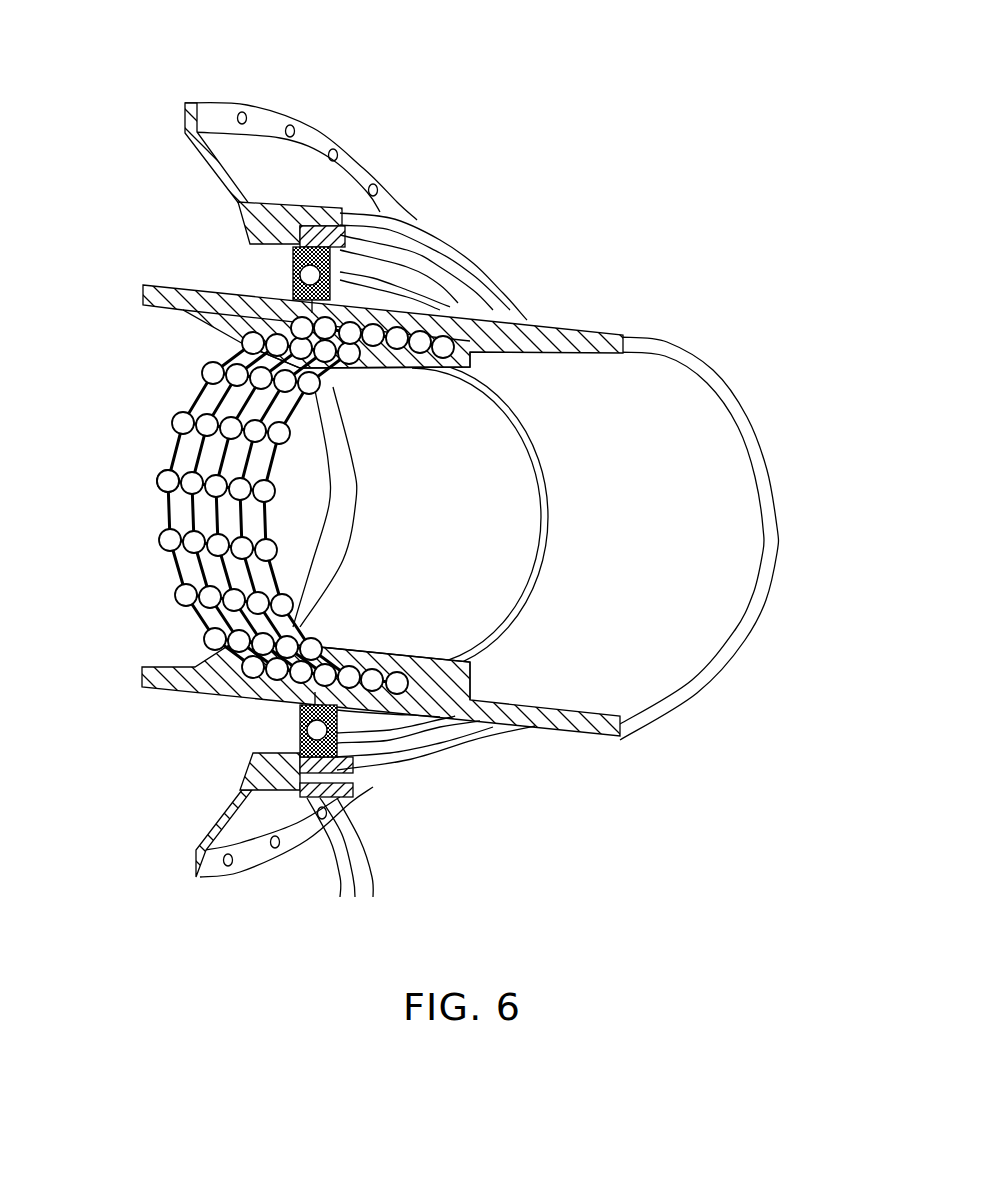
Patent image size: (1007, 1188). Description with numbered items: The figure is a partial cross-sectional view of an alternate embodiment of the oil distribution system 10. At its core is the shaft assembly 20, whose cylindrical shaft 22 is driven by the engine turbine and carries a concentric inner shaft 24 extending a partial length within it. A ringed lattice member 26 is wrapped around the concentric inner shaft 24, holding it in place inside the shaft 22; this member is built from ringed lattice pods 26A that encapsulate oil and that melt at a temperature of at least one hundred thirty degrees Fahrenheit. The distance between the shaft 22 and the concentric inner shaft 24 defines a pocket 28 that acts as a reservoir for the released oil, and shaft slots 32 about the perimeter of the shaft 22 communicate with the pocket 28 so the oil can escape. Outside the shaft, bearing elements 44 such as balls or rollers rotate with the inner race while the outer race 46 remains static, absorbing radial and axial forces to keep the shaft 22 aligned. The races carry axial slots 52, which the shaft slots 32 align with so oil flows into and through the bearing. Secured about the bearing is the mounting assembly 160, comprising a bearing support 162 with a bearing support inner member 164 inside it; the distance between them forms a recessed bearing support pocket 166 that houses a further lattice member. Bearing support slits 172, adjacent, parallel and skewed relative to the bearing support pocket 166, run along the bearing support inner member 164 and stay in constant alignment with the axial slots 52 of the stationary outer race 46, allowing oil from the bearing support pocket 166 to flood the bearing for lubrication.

The oil distribution system 10 is at (620, 130).
The shaft assembly 20 is at (655, 330).
The shaft 22 is at (730, 532).
The concentric inner shaft 24 is at (515, 532).
The ringed lattice member 26 is at (173, 453).
The ringed lattice pods 26A is at (173, 482).
The pocket 28 is at (490, 320).
The shaft slots 32 is at (243, 338).
The bearing elements 44 is at (297, 277).
The outer race 46 is at (407, 278).
The axial slots 52 is at (453, 300).
The mounting assembly 160 is at (262, 100).
The bearing support 162 is at (418, 220).
The bearing support inner member 164 is at (480, 728).
The bearing support pocket 166 is at (390, 727).
The bearing support slits 172 is at (343, 866).